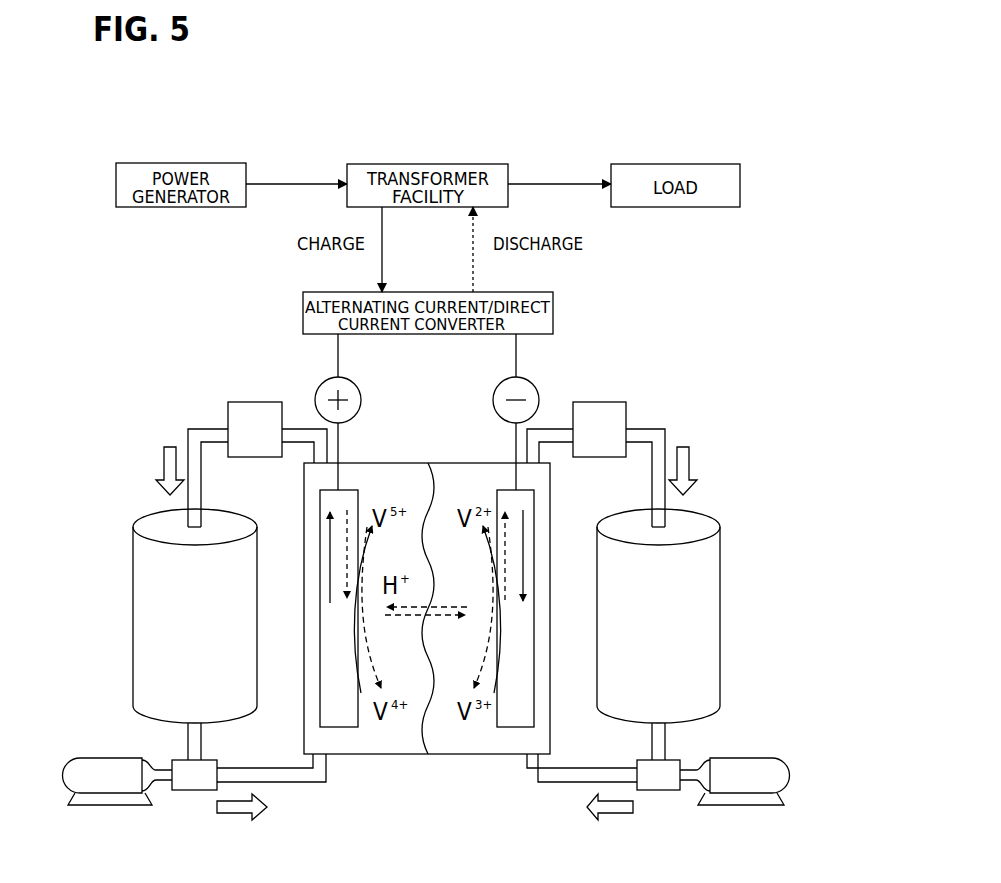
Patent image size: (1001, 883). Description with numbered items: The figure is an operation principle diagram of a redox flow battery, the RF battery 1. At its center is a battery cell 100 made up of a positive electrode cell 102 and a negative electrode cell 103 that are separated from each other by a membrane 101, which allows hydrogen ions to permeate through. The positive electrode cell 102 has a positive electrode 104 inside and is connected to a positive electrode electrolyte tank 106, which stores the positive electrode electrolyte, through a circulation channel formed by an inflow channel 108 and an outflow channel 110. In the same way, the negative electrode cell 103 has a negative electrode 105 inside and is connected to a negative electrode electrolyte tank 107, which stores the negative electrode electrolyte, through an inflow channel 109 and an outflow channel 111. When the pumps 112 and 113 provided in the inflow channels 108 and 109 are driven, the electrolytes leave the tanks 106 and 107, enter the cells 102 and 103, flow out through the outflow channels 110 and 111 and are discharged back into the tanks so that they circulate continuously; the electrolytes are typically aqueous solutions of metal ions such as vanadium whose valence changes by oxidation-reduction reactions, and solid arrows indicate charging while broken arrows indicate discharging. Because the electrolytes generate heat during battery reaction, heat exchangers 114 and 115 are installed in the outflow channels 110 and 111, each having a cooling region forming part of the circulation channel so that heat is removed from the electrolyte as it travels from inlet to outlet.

The RF battery 1 is at (703, 350).
The battery cell 100 is at (428, 448).
The membrane 101 is at (430, 757).
The positive electrode cell 102 is at (368, 757).
The negative electrode cell 103 is at (488, 757).
The positive electrode 104 is at (318, 717).
The negative electrode 105 is at (536, 717).
The positive electrode electrolyte tank 106 is at (140, 553).
The negative electrode electrolyte tank 107 is at (712, 553).
The inflow channel 108 is at (295, 783).
The inflow channel 109 is at (562, 783).
The outflow channel 110 is at (200, 428).
The outflow channel 111 is at (655, 428).
The pump 112 is at (95, 757).
The pump 113 is at (755, 757).
The heat exchanger 114 is at (255, 402).
The heat exchanger 115 is at (600, 402).